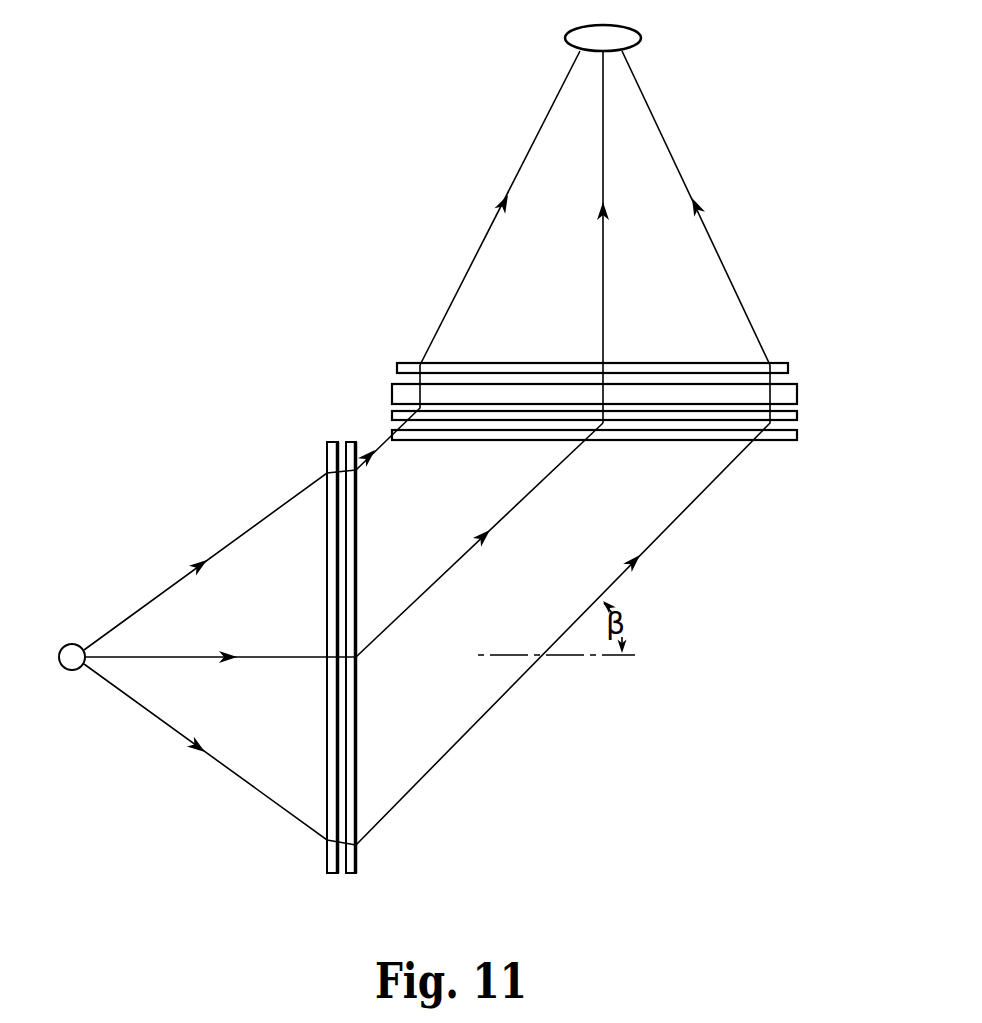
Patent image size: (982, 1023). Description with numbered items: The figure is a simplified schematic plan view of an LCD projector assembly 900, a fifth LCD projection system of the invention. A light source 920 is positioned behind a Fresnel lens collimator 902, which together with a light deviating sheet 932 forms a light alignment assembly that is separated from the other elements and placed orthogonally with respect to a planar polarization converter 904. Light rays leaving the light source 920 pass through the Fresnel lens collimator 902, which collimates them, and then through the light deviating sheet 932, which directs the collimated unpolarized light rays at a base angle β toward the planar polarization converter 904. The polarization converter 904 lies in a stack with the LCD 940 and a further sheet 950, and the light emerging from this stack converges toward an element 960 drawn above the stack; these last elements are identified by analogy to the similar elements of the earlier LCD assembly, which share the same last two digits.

The LCD projector assembly 900 is at (246, 209).
The Fresnel lens collimator 902 is at (330, 858).
The planar polarization converter 904 is at (801, 408).
The light source 920 is at (70, 669).
The light deviating sheet 932 is at (356, 858).
The LCD 940 is at (797, 393).
The element corresponding to numeral ending in 50 of the LCD assembly 950 is at (788, 365).
The element corresponding to numeral ending in 60 of the LCD assembly 960 is at (571, 31).